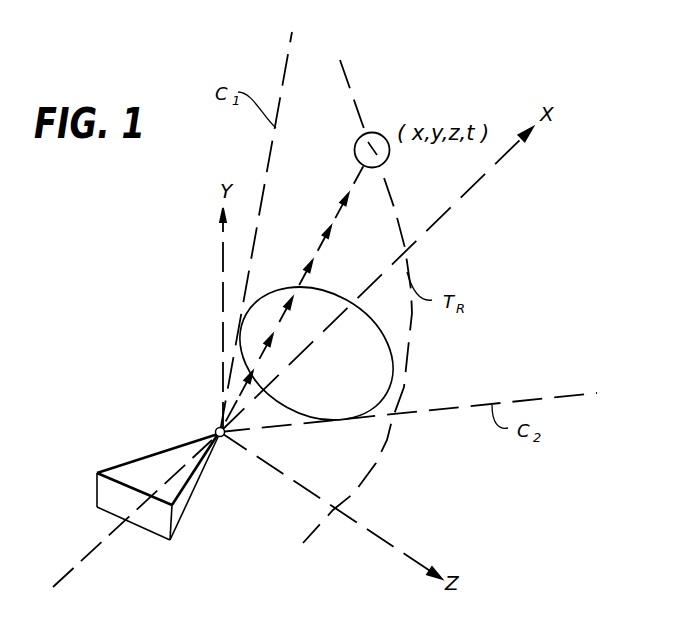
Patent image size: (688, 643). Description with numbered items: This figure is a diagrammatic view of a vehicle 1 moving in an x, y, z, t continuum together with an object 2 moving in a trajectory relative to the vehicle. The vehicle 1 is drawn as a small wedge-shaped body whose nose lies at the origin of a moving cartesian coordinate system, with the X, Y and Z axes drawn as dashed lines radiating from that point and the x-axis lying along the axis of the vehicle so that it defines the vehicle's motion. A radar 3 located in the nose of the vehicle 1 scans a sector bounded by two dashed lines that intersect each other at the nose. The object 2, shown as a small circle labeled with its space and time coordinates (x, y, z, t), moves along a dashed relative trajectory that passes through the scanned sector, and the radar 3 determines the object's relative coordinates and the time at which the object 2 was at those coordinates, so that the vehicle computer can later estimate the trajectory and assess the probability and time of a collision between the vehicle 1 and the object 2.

The vehicle 1 is at (155, 463).
The object 2 is at (383, 134).
The radar 3 is at (215, 428).